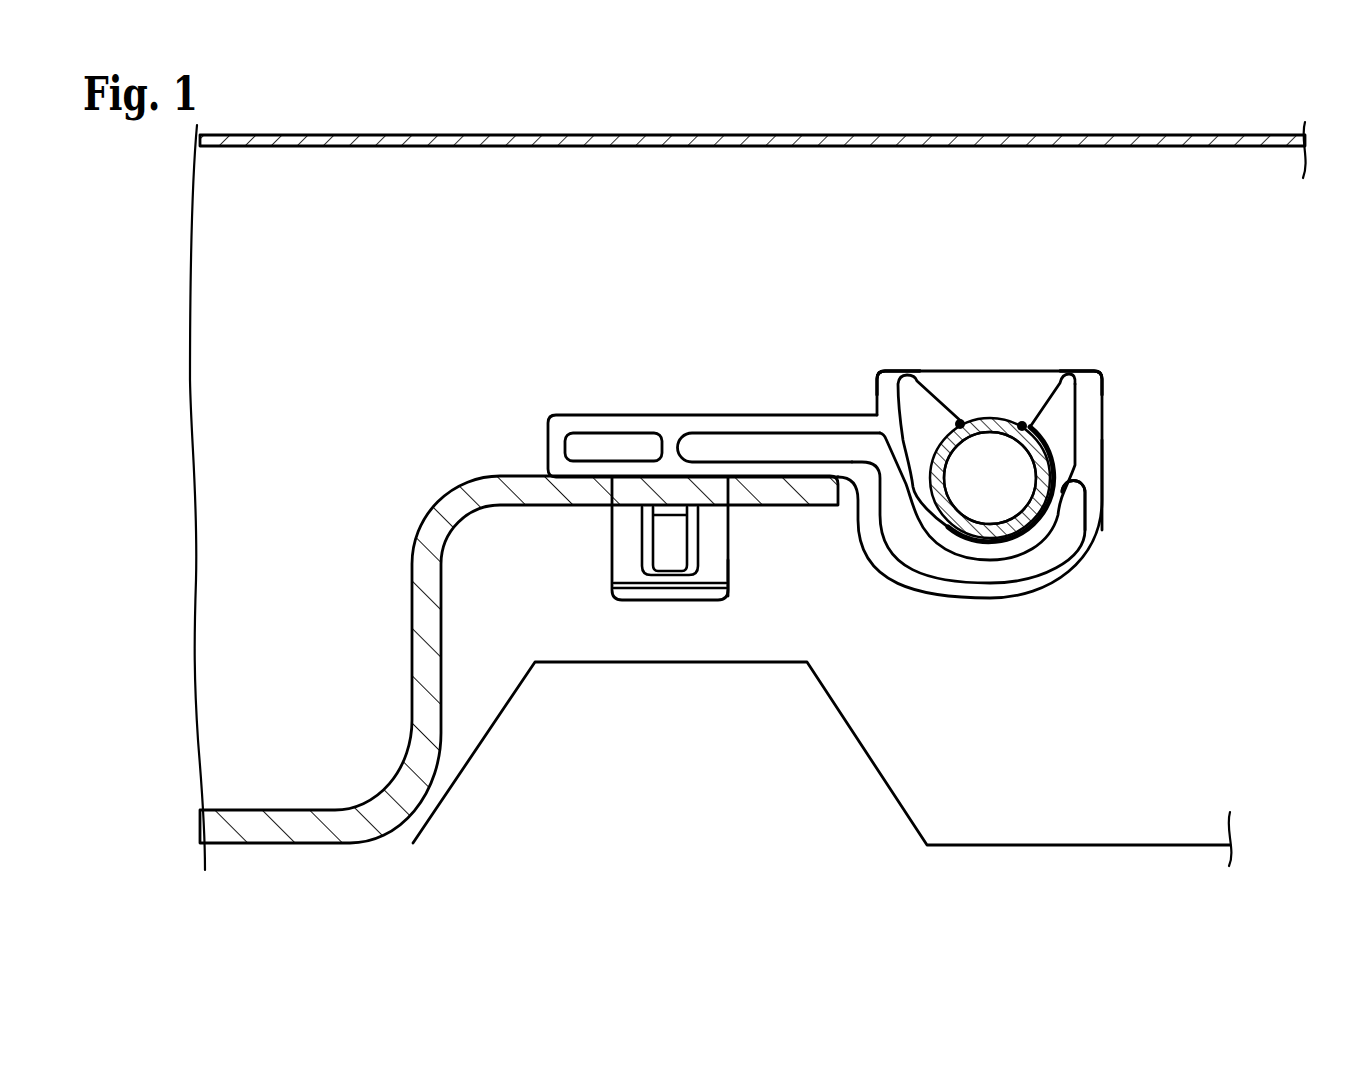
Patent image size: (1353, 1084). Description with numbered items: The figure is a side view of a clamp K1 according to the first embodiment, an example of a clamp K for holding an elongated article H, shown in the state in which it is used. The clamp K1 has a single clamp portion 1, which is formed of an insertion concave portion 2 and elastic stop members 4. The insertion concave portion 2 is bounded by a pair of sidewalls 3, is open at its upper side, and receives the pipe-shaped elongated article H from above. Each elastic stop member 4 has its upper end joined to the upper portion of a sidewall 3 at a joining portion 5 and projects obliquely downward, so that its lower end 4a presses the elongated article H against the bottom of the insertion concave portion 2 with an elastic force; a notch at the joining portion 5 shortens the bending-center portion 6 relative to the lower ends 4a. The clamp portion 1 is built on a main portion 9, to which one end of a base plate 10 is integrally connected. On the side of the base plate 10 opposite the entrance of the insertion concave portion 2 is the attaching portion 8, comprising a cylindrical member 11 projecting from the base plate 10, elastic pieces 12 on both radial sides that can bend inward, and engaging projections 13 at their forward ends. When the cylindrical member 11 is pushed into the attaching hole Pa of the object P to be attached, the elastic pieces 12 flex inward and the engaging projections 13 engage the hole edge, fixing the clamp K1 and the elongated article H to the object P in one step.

The clamp portion 1 is at (1012, 425).
The insertion concave portion 2 is at (1022, 535).
The sidewall 3 is at (880, 408).
The elastic stop member 4 is at (930, 380).
The lower end of elastic stop member 4a is at (966, 420).
The joining portion 5 is at (920, 372).
The bending center portion 6 is at (989, 383).
The attaching portion 8 is at (617, 568).
The main portion 9 is at (1105, 478).
The base plate 10 is at (728, 412).
The cylindrical member 11 is at (717, 560).
The elastic piece 12 is at (668, 590).
The engaging projection 13 is at (668, 560).
The elongated article H is at (992, 540).
The clamp K is at (1005, 425).
The clamp according to the first embodiment K1 is at (1005, 425).
The object to be attached P is at (502, 477).
The attaching hole Pa is at (605, 488).